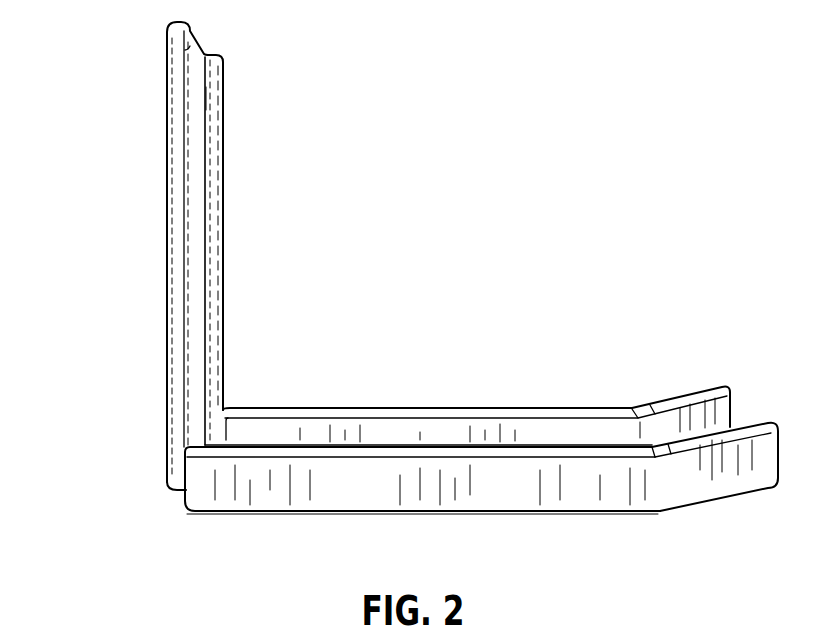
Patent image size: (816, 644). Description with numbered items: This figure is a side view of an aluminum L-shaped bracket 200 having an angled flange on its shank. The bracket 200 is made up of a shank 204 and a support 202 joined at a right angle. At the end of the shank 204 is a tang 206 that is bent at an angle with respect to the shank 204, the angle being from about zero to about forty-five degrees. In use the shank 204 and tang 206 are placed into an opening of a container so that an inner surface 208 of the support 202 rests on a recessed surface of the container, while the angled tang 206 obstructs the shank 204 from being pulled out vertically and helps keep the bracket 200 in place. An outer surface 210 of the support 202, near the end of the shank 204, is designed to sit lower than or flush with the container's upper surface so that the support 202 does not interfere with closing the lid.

The bracket 200 is at (302, 487).
The support 202 is at (181, 191).
The shank 204 is at (593, 487).
The tang 206 is at (707, 482).
The inner surface 208 is at (223, 341).
The outer surface 210 is at (145, 424).